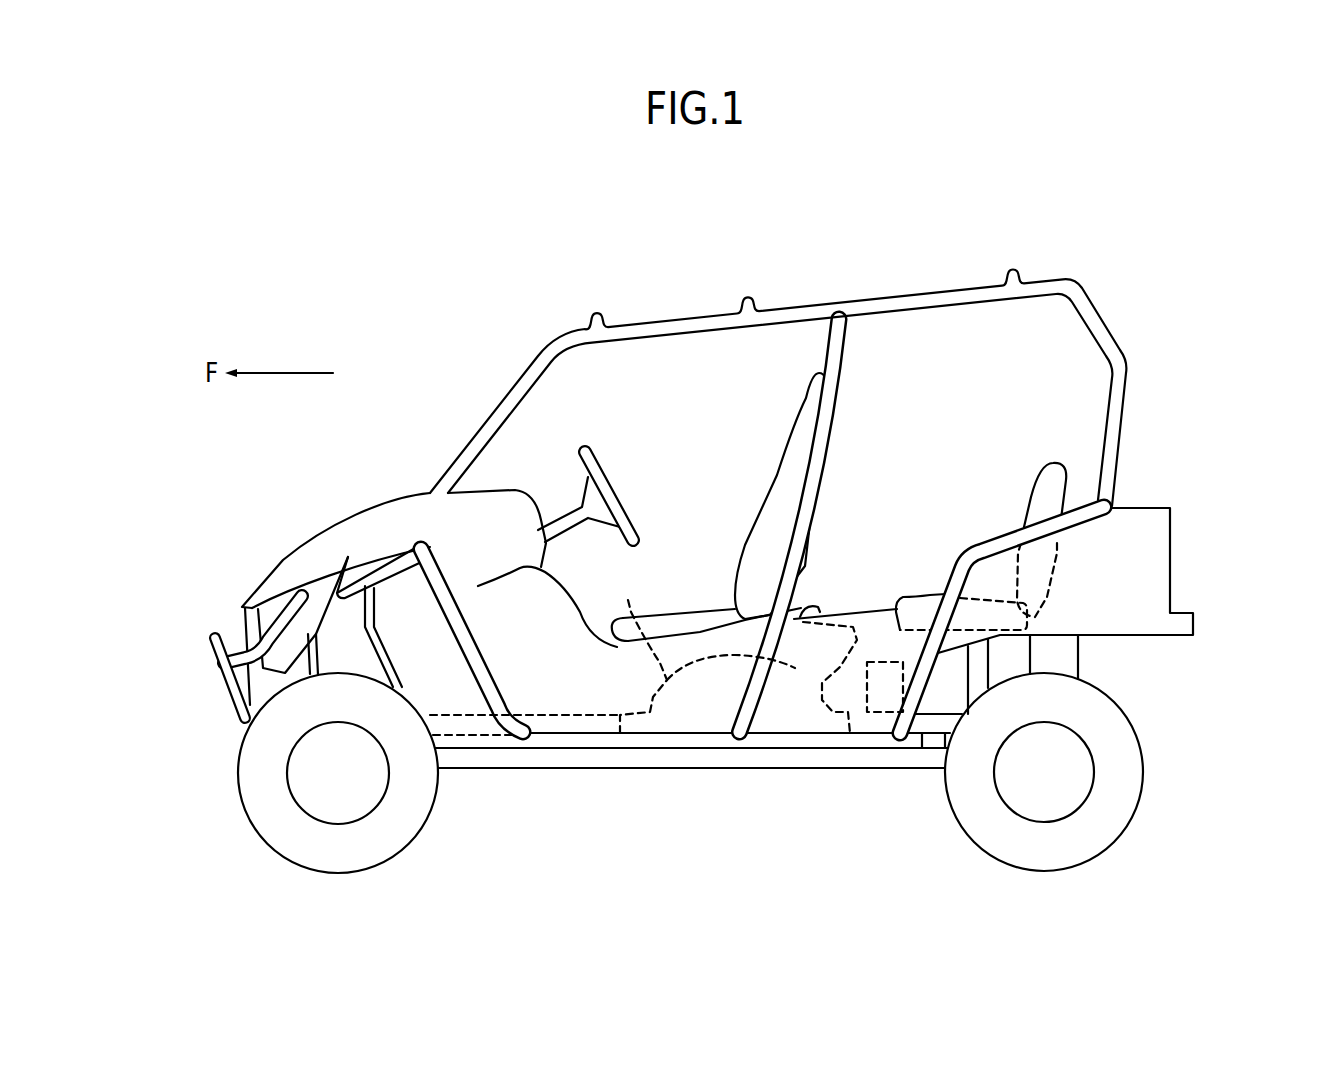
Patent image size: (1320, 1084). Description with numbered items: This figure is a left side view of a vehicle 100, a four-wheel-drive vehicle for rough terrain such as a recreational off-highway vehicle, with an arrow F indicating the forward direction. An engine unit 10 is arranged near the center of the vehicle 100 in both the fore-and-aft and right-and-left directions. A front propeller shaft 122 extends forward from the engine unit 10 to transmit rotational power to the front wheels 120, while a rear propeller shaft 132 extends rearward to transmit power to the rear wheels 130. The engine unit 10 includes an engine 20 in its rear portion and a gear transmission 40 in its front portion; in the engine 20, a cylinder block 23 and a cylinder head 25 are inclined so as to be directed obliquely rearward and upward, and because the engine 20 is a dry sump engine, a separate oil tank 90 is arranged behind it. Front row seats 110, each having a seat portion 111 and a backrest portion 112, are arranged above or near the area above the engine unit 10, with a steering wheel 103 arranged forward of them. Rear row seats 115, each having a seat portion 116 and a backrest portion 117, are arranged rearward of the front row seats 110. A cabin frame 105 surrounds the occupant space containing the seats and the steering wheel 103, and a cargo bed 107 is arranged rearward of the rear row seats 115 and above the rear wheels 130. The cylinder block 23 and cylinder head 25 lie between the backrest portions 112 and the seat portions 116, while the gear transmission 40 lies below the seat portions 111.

The engine unit 10 is at (704, 712).
The engine 20 is at (793, 712).
The cylinder block 23 is at (847, 573).
The cylinder head 25 is at (805, 613).
The gear transmission 40 is at (548, 651).
The oil tank 90 is at (878, 697).
The vehicle 100 is at (405, 310).
The steering wheel 103 is at (580, 442).
The cabin frame 105 is at (795, 312).
The cargo bed 107 is at (1160, 568).
The front row seats 110 is at (719, 507).
The seat portion 111 is at (677, 625).
The backrest portion 112 is at (775, 520).
The rear row seats 115 is at (981, 501).
The seat portion 116 is at (917, 593).
The backrest portion 117 is at (1045, 490).
The front wheels 120 is at (248, 830).
The front propeller shaft 122 is at (490, 740).
The rear wheels 130 is at (1140, 815).
The rear propeller shaft 132 is at (933, 728).